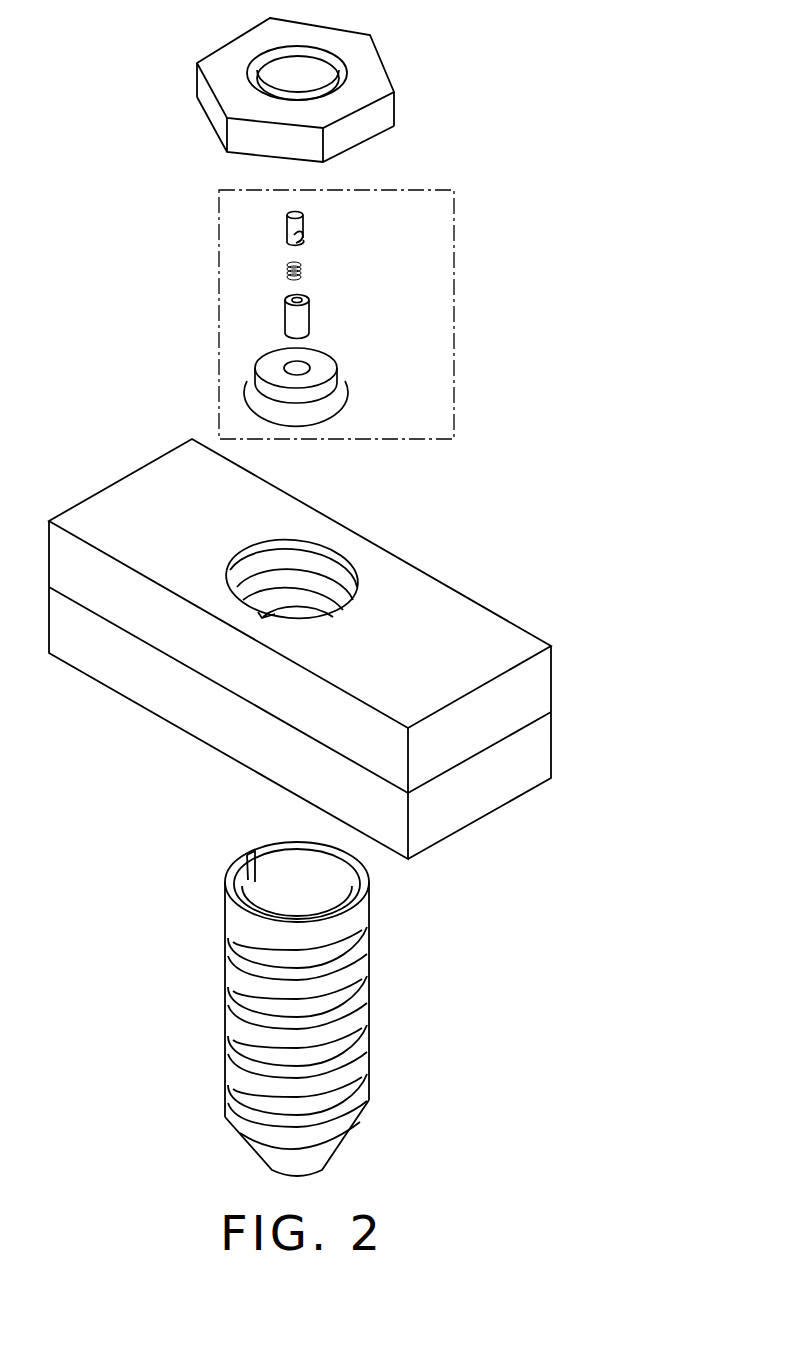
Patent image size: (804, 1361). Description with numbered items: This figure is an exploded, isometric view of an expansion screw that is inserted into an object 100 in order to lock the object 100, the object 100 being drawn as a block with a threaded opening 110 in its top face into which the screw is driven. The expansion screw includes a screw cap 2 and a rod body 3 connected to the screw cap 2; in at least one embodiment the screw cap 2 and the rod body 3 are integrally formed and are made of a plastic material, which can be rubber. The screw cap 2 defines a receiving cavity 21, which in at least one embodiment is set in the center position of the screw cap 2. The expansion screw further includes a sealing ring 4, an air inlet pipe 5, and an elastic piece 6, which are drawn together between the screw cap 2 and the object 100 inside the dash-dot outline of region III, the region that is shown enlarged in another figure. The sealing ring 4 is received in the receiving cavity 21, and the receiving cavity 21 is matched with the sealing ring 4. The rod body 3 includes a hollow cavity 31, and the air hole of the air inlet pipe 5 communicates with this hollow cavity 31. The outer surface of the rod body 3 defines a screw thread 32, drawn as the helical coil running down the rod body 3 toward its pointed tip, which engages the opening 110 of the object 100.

The screw cap 2 is at (332, 90).
The receiving cavity 21 is at (320, 78).
The region III is at (455, 308).
The air inlet pipe 5 is at (300, 222).
The elastic piece 6 is at (303, 268).
The sealing ring 4 is at (345, 395).
The object 100 is at (360, 649).
The threaded hole of block 110 is at (333, 587).
The rod body 3 is at (328, 998).
The hollow cavity 31 is at (291, 905).
The screw thread 32 is at (330, 1030).